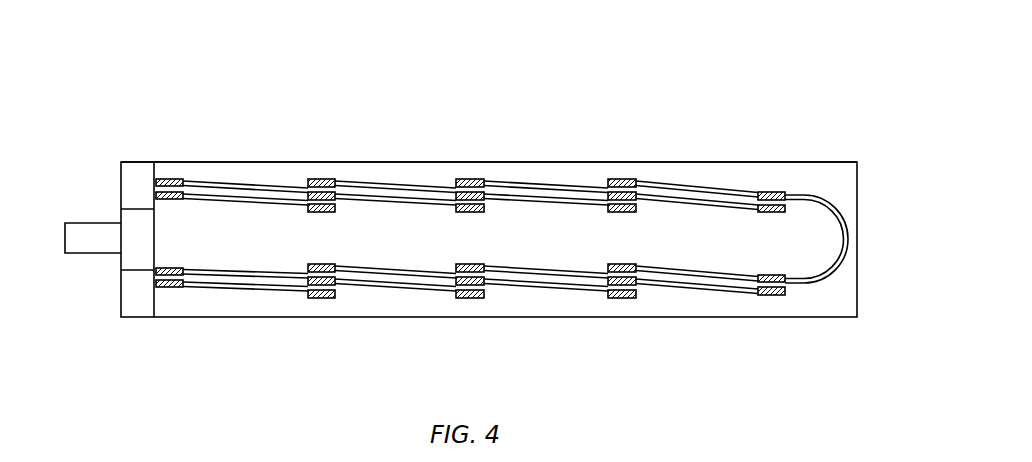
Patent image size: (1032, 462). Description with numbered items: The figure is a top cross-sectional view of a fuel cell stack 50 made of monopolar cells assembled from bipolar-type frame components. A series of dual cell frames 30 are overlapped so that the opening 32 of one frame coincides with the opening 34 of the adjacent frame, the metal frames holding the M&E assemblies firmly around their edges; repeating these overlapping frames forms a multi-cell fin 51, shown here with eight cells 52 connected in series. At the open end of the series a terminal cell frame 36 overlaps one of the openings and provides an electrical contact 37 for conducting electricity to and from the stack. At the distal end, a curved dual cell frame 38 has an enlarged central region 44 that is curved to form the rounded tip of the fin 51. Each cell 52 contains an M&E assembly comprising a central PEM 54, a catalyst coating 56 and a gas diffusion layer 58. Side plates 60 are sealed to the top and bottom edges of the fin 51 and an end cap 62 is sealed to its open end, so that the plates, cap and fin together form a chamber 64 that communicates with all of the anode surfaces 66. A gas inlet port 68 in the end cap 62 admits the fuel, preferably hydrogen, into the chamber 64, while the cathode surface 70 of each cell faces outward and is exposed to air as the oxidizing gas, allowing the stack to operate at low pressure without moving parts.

The dual cell frame 30 is at (457, 188).
The opening 32 is at (238, 176).
The opening 34 is at (420, 215).
The terminal cell frame 36 is at (176, 268).
The electrical contact 37 is at (140, 208).
The curved dual cell frame 38 is at (767, 192).
The enlarged central region 44 is at (833, 207).
The fuel cell stack 50 is at (636, 104).
The fin 51 is at (675, 166).
The cells 52 is at (362, 289).
The central PEM 54 is at (683, 285).
The catalyst coating 56 is at (702, 292).
The gas diffusion layer 58 is at (733, 288).
The side plates 60 is at (540, 162).
The end cap 62 is at (138, 172).
The chamber 64 is at (580, 250).
The anode surfaces 66 is at (260, 272).
The gas inlet port 68 is at (88, 255).
The cathode surface 70 is at (577, 187).